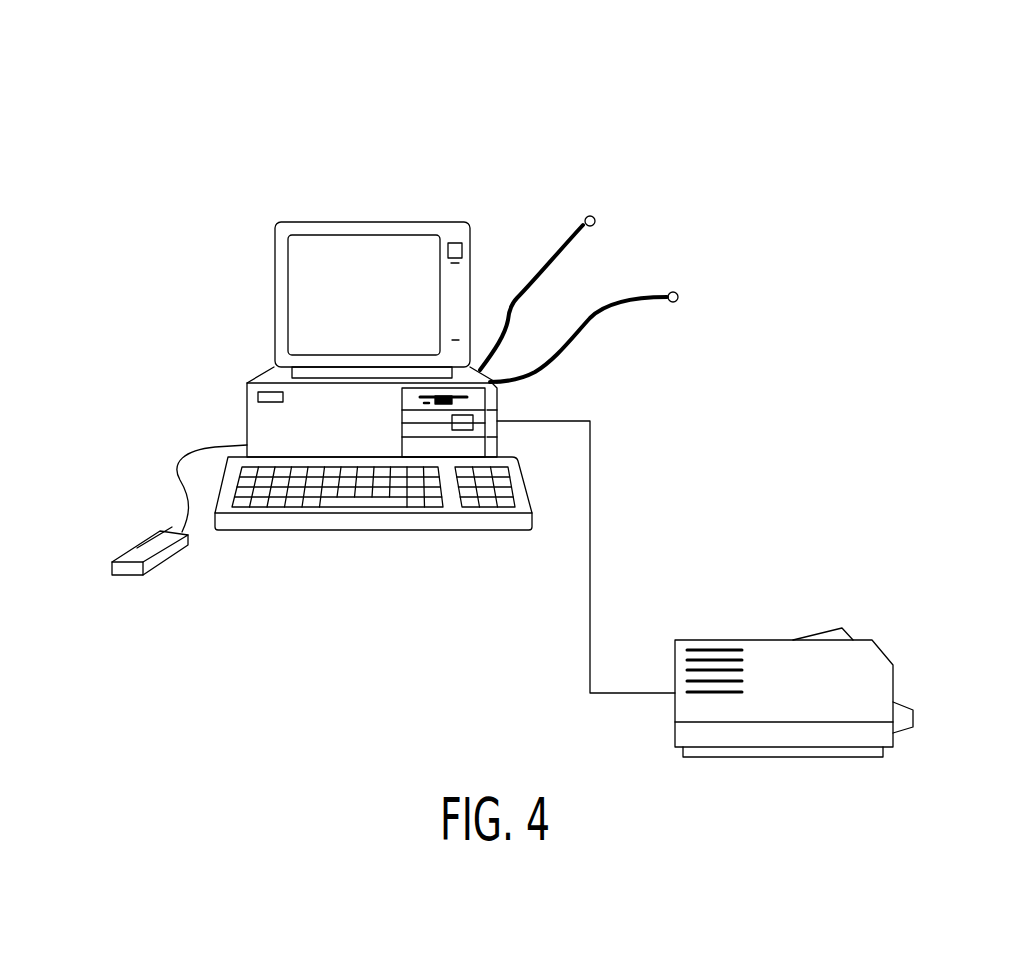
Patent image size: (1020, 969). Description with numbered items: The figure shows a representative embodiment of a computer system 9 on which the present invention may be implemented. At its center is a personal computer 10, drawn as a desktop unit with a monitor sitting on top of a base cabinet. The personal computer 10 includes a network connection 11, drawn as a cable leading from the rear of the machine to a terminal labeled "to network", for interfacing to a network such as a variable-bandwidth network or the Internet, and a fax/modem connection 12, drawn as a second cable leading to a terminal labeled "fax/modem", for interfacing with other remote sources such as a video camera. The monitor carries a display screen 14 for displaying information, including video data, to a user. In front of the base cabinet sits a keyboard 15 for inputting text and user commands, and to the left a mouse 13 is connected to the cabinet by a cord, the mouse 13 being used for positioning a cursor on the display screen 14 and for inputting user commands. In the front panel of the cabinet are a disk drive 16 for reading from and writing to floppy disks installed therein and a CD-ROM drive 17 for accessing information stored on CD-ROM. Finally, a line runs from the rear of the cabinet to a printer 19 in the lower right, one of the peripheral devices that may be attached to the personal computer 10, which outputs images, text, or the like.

The computer system 9 is at (600, 123).
The personal computer 10 is at (391, 124).
The network connection 11 is at (540, 265).
The fax/modem connection 12 is at (583, 333).
The mouse 13 is at (130, 545).
The display screen 14 is at (319, 252).
The keyboard 15 is at (360, 518).
The disk drive 16 is at (402, 395).
The CD-ROM drive 17 is at (402, 418).
The printer 19 is at (733, 640).